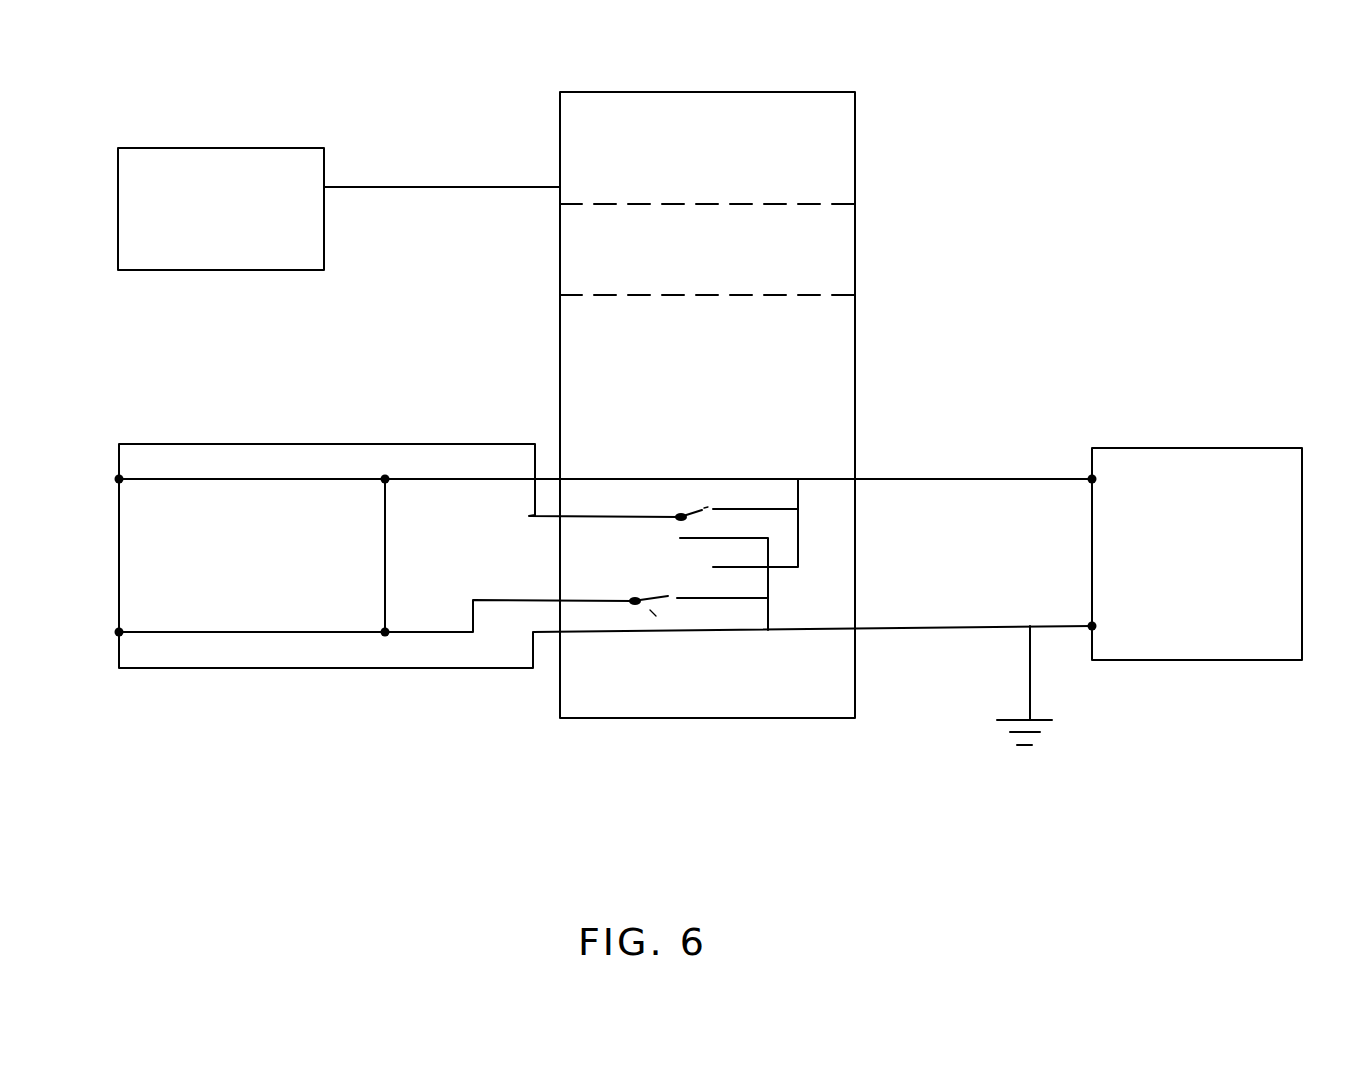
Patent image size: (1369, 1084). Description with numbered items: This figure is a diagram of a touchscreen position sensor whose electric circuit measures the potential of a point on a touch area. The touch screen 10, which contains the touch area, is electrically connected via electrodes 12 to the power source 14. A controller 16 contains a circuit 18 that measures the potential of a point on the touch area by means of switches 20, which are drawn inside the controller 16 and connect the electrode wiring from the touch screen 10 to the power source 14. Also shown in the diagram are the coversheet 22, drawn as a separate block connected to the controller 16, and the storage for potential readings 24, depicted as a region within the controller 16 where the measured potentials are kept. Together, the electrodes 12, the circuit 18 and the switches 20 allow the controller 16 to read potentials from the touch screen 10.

The touch screen 10 is at (133, 552).
The electrodes 12 is at (118, 478).
The power source 14 is at (1272, 571).
The controller 16 is at (887, 253).
The circuit 18 is at (818, 140).
The switches 20 is at (677, 505).
The coversheet 22 is at (224, 227).
The storage for potential readings 24 is at (833, 282).